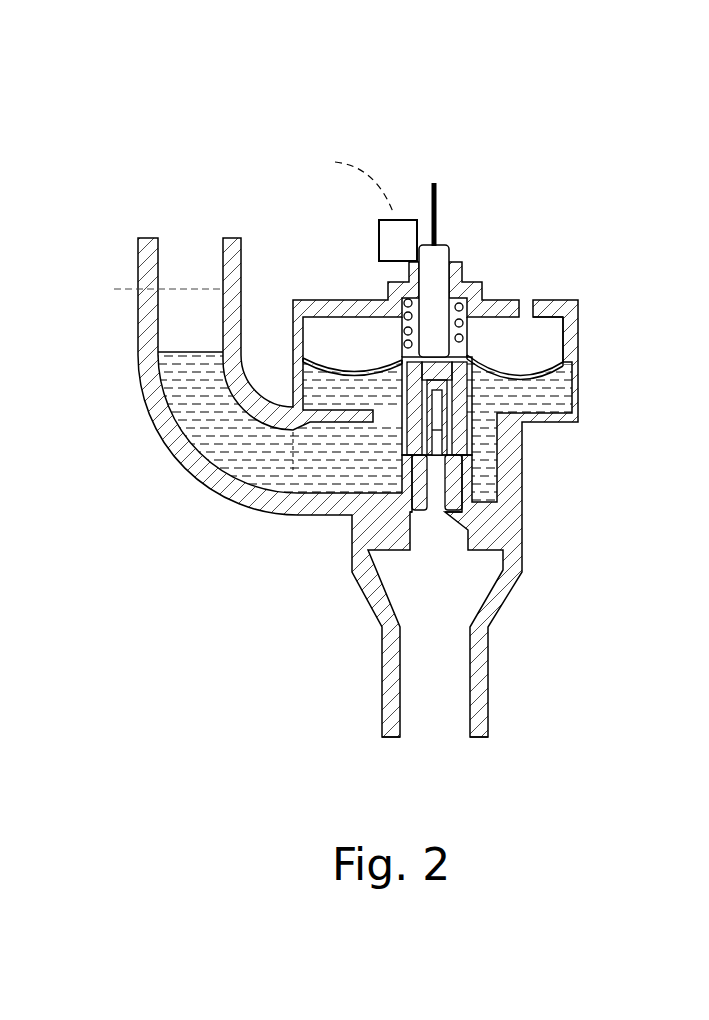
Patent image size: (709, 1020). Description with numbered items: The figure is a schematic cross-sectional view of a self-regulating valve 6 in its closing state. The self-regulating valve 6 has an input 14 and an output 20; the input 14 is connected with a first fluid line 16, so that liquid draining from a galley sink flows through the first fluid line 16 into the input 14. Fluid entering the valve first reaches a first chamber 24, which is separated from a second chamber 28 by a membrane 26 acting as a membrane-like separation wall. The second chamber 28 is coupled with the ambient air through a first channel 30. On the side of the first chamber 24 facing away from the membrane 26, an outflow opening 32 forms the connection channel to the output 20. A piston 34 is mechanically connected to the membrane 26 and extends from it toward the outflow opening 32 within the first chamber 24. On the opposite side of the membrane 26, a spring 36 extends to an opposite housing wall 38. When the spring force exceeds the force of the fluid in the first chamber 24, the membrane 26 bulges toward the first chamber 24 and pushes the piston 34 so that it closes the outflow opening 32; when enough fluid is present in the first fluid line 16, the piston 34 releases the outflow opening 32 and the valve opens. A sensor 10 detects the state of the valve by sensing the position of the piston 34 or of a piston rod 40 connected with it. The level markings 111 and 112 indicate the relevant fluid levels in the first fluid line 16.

The self-regulating valve 6 is at (575, 182).
The sensor 10 is at (374, 240).
The input 14 is at (301, 476).
The first fluid line 16 is at (184, 226).
The output 20 is at (428, 738).
The first chamber 24 is at (573, 388).
The membrane 26 is at (501, 362).
The second chamber 28 is at (557, 335).
The first channel 30 is at (528, 296).
The outflow opening 32 is at (440, 532).
The piston 34 is at (466, 457).
The spring 36 is at (397, 331).
The housing wall 38 is at (482, 274).
The piston rod 40 is at (457, 242).
The maximum fill level 111 is at (150, 290).
The liquid level 112 is at (158, 352).